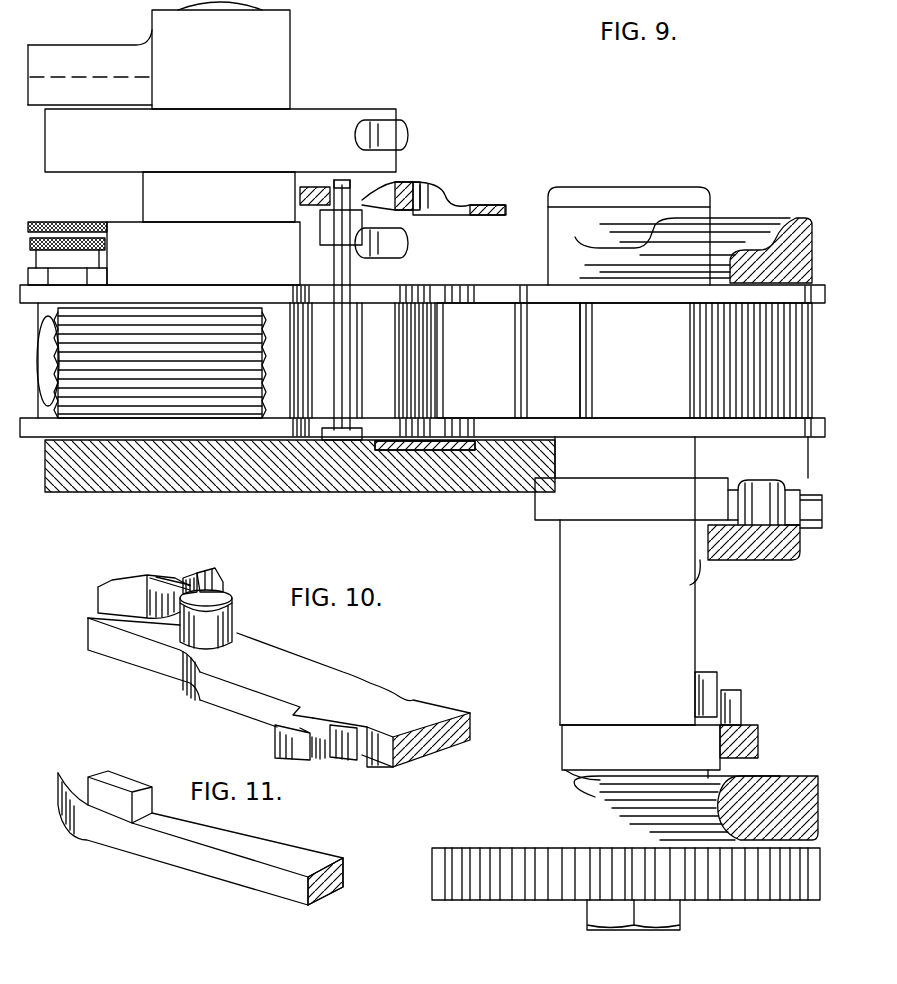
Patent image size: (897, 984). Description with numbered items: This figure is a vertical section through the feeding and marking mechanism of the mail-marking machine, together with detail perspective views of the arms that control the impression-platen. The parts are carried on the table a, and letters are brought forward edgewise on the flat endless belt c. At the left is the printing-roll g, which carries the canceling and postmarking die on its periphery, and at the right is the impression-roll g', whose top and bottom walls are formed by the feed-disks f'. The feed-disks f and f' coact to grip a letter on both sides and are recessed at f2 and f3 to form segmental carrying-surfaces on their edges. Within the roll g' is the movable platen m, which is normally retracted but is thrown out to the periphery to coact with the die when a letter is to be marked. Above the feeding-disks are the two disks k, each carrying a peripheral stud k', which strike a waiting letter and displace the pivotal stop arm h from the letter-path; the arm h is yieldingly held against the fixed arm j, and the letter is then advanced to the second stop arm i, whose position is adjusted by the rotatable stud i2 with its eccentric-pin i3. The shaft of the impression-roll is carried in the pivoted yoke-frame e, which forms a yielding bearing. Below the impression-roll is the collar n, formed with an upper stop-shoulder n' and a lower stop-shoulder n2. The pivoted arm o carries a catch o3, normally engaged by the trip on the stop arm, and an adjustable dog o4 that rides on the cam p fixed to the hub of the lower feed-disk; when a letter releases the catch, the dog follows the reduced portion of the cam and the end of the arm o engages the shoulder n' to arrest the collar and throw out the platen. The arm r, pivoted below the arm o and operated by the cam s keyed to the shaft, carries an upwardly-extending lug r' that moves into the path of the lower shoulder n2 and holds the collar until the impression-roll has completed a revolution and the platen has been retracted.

In FIG. 9, the disk k is at (220, 171).
In FIG. 9, the stud k' is at (409, 166).
In FIG. 9, the arm i is at (298, 190).
In FIG. 9, the rotatable stud i2 is at (335, 378).
In FIG. 9, the eccentric-pin i3 is at (342, 195).
In FIG. 9, the fixed arm j is at (397, 182).
In FIG. 9, the arm h is at (470, 205).
In FIG. 9, the feeding-disk f is at (422, 381).
In FIG. 9, the feed-disk f' is at (696, 357).
In FIG. 9, the recess f2 is at (305, 292).
In FIG. 9, the recess f3 is at (512, 292).
In FIG. 9, the printing-roll g is at (163, 328).
In FIG. 9, the impression-roll g' is at (508, 360).
In FIG. 9, the platen m is at (588, 376).
In FIG. 9, the yoke-frame e is at (745, 228).
In FIG. 9, the endless belt c is at (425, 452).
In FIG. 9, the table a is at (470, 455).
In FIG. 9, the cam p is at (560, 510).
In FIG. 9, the collar n is at (665, 581).
In FIG. 9, the stop-shoulder n' is at (716, 580).
In FIG. 9, the stop-shoulder n2 is at (705, 680).
In FIG. 9, the arm o is at (783, 562).
In FIG. 10, the arm o is at (343, 673).
In FIG. 10, the catch o3 is at (275, 745).
In FIG. 9, the adjustable dog o4 is at (752, 500).
In FIG. 10, the adjustable dog o4 is at (100, 585).
In FIG. 9, the arm r is at (760, 729).
In FIG. 11, the arm r is at (200, 845).
In FIG. 9, the lug r' is at (758, 698).
In FIG. 11, the lug r' is at (125, 780).
In FIG. 9, the cam s is at (600, 750).